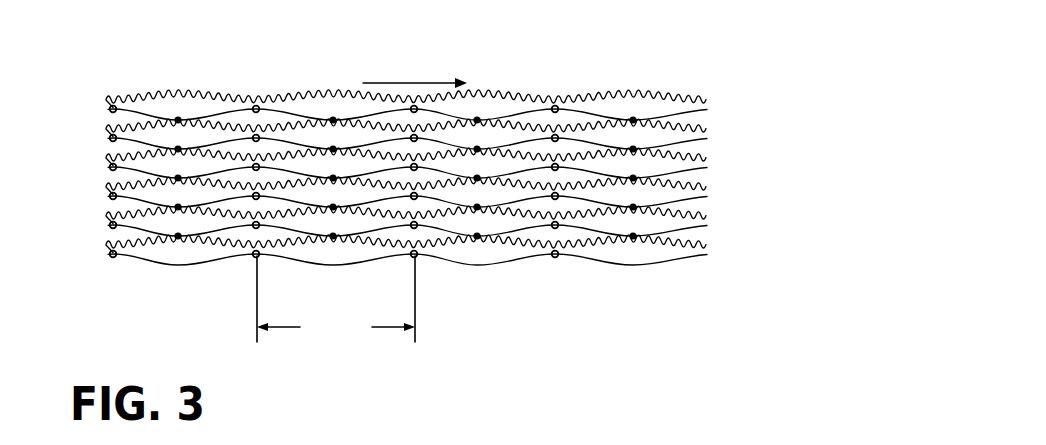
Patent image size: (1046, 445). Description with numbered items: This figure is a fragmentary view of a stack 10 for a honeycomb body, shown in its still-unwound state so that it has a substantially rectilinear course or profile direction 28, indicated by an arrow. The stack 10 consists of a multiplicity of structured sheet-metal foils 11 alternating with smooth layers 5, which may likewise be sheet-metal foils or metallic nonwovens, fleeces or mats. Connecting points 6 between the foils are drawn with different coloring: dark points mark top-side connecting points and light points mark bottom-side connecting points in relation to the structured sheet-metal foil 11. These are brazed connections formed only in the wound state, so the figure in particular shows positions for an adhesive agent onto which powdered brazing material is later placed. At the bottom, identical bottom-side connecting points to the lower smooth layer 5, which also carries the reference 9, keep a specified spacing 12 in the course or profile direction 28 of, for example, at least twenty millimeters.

The smooth layer 5 is at (218, 117).
The connecting points 6 is at (110, 167).
The bottom support filament 9 is at (503, 263).
The stack 10 is at (421, 188).
The structured sheet-metal foil 11 is at (302, 98).
The spacing 12 is at (336, 301).
The course or profile direction 28 is at (410, 83).